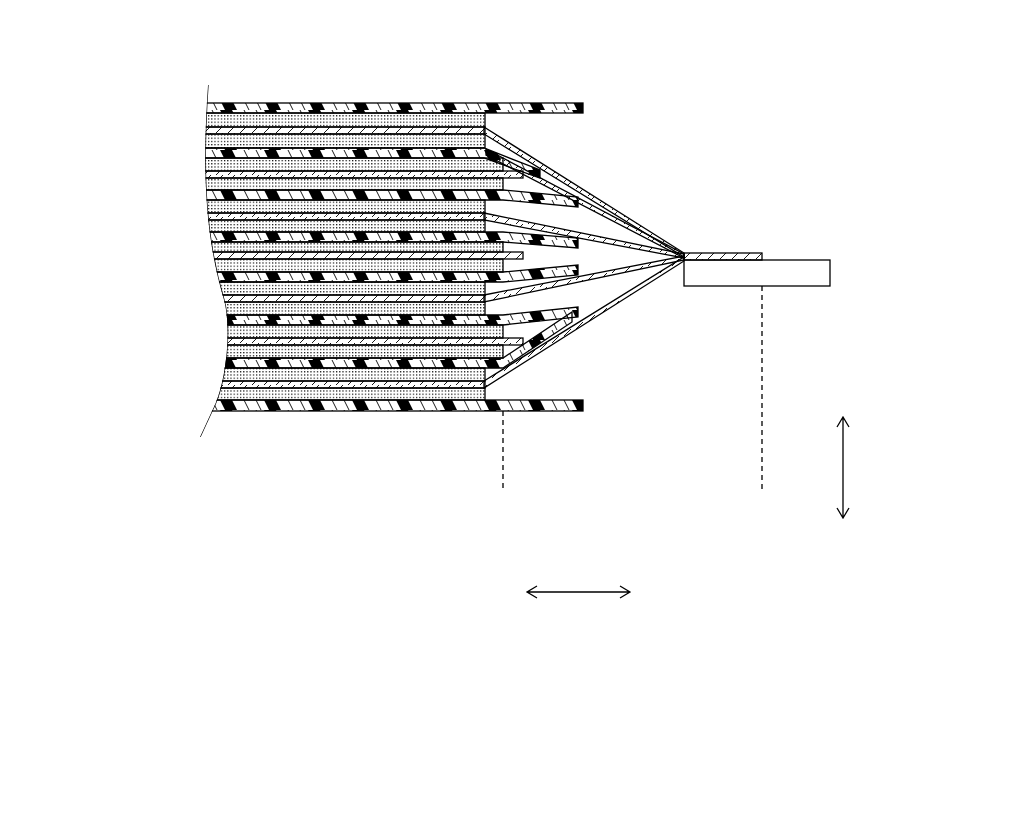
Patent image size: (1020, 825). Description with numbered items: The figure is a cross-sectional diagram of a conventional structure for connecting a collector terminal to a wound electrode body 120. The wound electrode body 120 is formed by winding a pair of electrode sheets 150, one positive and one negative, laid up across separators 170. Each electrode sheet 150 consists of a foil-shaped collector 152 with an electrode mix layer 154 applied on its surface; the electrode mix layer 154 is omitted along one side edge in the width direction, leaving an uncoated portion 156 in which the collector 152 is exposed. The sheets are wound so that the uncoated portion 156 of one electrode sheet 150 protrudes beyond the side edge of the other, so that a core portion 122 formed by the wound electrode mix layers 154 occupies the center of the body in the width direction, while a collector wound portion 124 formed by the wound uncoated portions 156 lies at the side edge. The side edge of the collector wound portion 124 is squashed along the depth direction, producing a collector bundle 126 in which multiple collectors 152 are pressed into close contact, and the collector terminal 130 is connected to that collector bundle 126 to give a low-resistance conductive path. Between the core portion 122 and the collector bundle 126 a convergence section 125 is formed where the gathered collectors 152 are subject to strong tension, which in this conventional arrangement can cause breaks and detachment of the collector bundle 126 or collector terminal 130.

The wound electrode body 120 is at (540, 68).
The core portion 122 is at (452, 279).
The collector wound portion 124 is at (503, 490).
The convergence section 125 is at (695, 100).
The collector bundle 126 is at (742, 252).
The collector terminal 130 is at (803, 260).
The electrode sheet 150 is at (103, 80).
The collector 152 is at (204, 125).
The electrode mix layer 154 is at (204, 112).
The uncoated portion 156 is at (587, 193).
The separator 170 is at (252, 103).